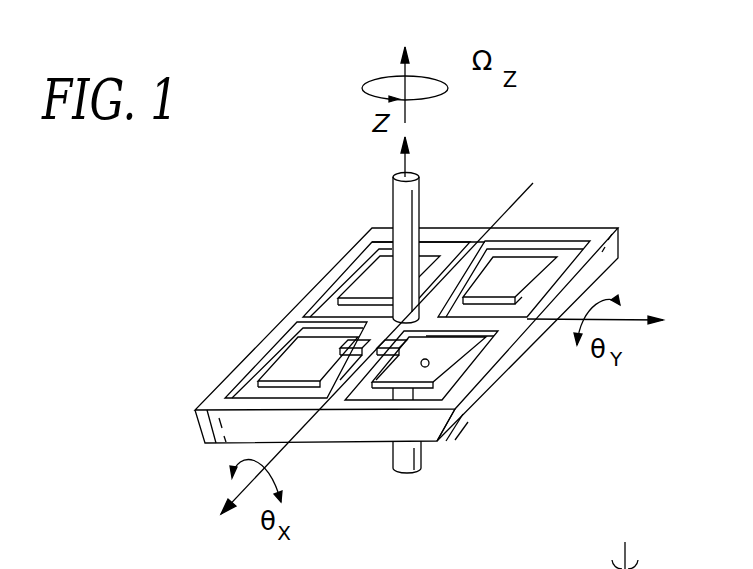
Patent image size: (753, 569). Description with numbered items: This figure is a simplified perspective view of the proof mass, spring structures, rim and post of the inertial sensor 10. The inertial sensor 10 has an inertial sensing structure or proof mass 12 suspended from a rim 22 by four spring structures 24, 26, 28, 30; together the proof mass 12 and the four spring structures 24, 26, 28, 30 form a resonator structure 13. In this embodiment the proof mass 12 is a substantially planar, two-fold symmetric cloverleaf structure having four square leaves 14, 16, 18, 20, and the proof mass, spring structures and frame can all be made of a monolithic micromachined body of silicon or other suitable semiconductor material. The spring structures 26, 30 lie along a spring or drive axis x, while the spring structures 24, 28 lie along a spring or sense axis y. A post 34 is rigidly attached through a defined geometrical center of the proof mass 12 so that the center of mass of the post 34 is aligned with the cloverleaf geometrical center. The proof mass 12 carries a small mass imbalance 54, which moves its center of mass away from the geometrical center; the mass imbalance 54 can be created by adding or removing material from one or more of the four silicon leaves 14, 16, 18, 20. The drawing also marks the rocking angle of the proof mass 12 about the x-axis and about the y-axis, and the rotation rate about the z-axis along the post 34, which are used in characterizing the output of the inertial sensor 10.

The inertial sensor 10 is at (393, 263).
The proof mass 12 is at (513, 265).
The resonator structure 13 is at (332, 252).
The square leaf 14 is at (530, 265).
The square leaf 16 is at (450, 350).
The square leaf 18 is at (300, 320).
The square leaf 20 is at (378, 277).
The rim 22 is at (433, 417).
The spring structure 24 is at (327, 318).
The spring structure 26 is at (453, 257).
The spring structure 28 is at (492, 323).
The spring structure 30 is at (355, 395).
The post 34 is at (392, 198).
The mass imbalance 54 is at (425, 365).